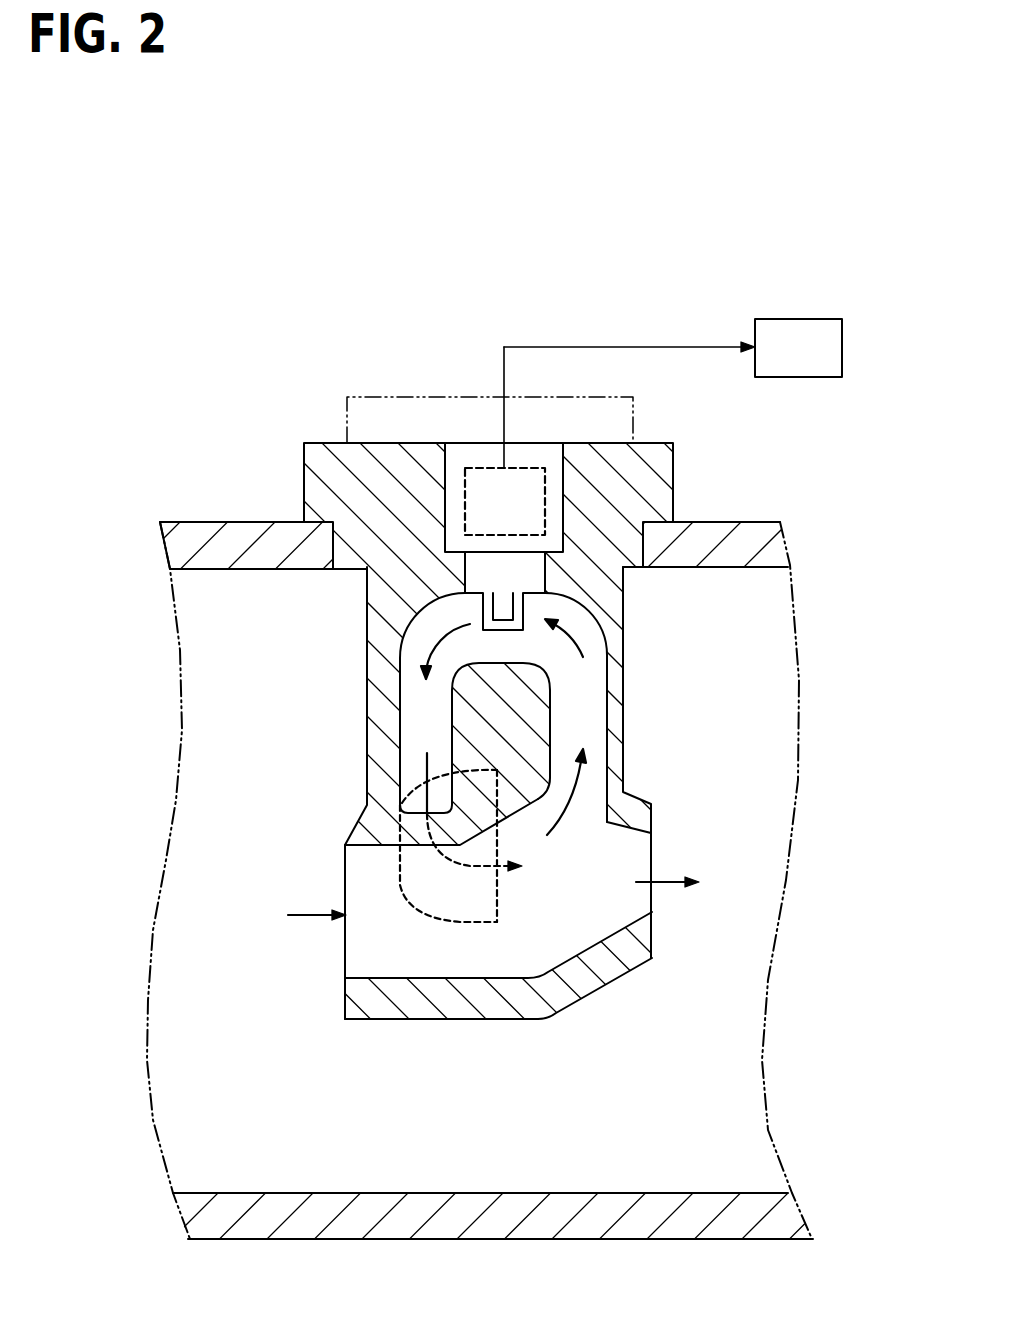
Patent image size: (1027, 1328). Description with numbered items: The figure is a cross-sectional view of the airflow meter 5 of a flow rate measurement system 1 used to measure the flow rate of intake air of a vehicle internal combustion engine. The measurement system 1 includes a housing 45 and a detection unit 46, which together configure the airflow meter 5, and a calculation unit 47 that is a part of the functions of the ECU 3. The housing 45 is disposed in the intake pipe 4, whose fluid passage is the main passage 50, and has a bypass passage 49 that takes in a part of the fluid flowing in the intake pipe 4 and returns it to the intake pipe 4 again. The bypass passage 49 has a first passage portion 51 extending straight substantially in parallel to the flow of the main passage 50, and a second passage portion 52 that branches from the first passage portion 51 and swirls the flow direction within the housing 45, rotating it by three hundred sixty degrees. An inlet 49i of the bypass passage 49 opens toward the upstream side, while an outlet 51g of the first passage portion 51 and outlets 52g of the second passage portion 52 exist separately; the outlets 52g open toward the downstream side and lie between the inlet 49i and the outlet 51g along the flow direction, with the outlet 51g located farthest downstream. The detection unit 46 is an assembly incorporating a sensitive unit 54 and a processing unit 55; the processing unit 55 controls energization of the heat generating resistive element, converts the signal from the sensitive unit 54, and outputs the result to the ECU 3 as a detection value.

The flow rate measurement system 1 is at (206, 280).
The airflow meter 5 is at (210, 383).
The intake pipe 4 is at (200, 538).
The main passage 50 is at (218, 572).
The housing 45 is at (315, 440).
The detection unit 46 is at (470, 438).
The calculation unit 47 is at (792, 328).
The ECU 3 is at (680, 316).
The processing unit 55 is at (553, 497).
The sensitive unit 54 is at (503, 608).
The second passage portion 52 is at (583, 638).
The bypass passage 49 is at (418, 750).
The first passage portion 51 is at (480, 948).
The inlet 49i is at (345, 888).
The outlet 51g is at (651, 860).
The outlets 52g is at (497, 890).